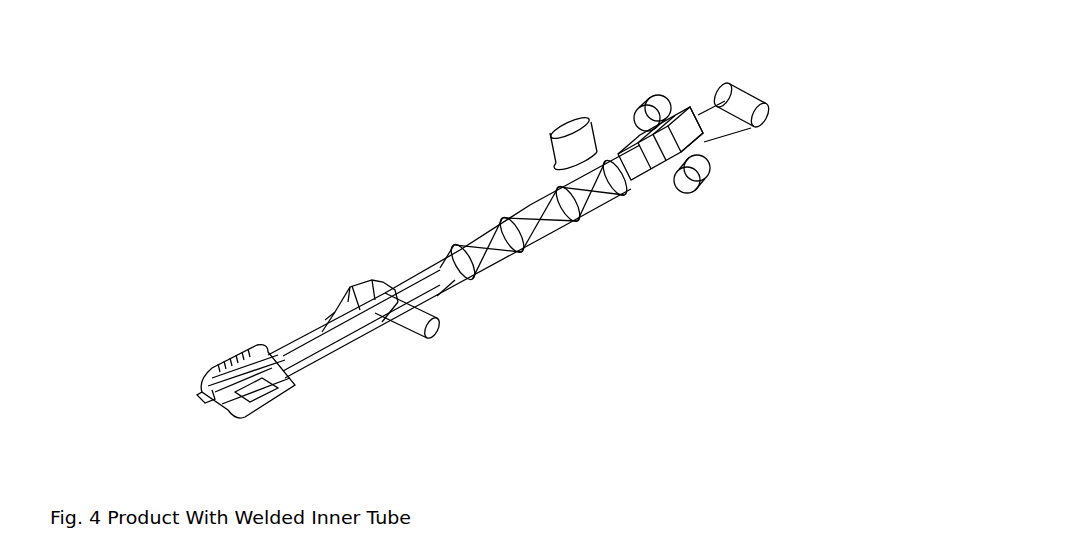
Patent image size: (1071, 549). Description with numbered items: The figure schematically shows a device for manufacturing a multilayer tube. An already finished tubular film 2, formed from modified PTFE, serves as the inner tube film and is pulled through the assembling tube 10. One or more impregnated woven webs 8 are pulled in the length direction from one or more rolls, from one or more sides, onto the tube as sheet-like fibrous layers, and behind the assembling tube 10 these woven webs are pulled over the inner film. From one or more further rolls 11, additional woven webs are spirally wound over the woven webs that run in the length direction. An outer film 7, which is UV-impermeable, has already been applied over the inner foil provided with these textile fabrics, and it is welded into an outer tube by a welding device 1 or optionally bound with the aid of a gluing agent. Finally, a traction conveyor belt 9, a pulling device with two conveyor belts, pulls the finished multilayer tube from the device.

The welding device 1 is at (361, 330).
The tubular film 2 is at (719, 69).
The outer film 7 is at (360, 287).
The impregnated woven webs 8 is at (586, 100).
The traction conveyor belt 9 is at (277, 387).
The assembling tube 10 is at (509, 239).
The rolls for spiral application 11 is at (567, 183).